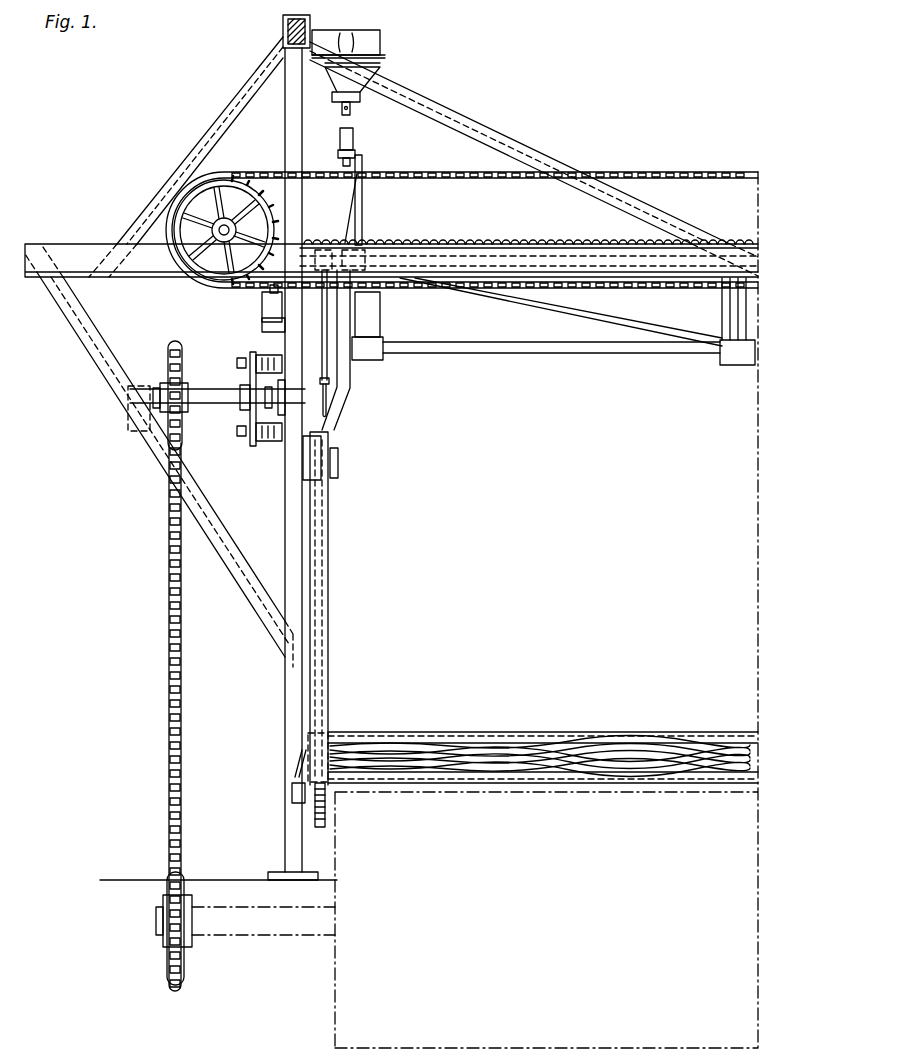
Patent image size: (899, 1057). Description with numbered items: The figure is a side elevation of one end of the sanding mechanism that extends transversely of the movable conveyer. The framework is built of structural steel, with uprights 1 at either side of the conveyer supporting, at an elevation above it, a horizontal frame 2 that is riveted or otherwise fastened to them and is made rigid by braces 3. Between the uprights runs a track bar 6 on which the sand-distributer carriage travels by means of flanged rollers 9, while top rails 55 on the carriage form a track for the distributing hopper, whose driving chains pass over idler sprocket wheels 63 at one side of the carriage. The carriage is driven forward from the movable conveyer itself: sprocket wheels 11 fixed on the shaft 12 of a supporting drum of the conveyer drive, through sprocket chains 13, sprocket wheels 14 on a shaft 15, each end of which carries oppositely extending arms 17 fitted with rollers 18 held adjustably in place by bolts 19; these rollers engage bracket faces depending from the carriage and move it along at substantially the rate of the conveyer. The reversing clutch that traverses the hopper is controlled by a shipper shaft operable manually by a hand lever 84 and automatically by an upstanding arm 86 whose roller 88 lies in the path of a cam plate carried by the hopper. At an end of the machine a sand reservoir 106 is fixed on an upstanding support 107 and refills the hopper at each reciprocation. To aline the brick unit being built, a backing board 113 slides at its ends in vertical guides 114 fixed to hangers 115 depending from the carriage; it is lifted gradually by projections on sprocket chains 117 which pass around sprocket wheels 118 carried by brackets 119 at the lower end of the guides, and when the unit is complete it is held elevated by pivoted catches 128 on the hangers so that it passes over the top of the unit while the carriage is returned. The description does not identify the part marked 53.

The uprights 1 is at (292, 690).
The horizontal frame 2 is at (83, 262).
The braces 3 is at (102, 358).
The track bar 6 is at (262, 327).
The flanged rollers 9 is at (262, 300).
The sprocket wheels 11 is at (168, 968).
The shaft 12 is at (157, 920).
The sprocket chains 13 is at (169, 673).
The sprocket wheels 14 is at (168, 364).
The shaft 15 is at (222, 403).
The arms 17 is at (250, 380).
The rollers 18 is at (262, 361).
The bolts 19 is at (238, 363).
The bearing block 53 is at (735, 308).
The top rails 55 is at (516, 252).
The idler sprocket wheels 63 is at (218, 192).
The hand lever 84 is at (328, 368).
The arm 86 is at (363, 160).
The roller 88 is at (353, 137).
The reservoir 106 is at (377, 44).
The upstanding support 107 is at (283, 36).
The backing board 113 is at (548, 755).
The vertical guides 114 is at (328, 608).
The hangers 115 is at (346, 403).
The sprocket chains 117 is at (322, 530).
The sprocket wheels 118 is at (316, 820).
The brackets 119 is at (294, 775).
The pivoted catches 128 is at (339, 470).